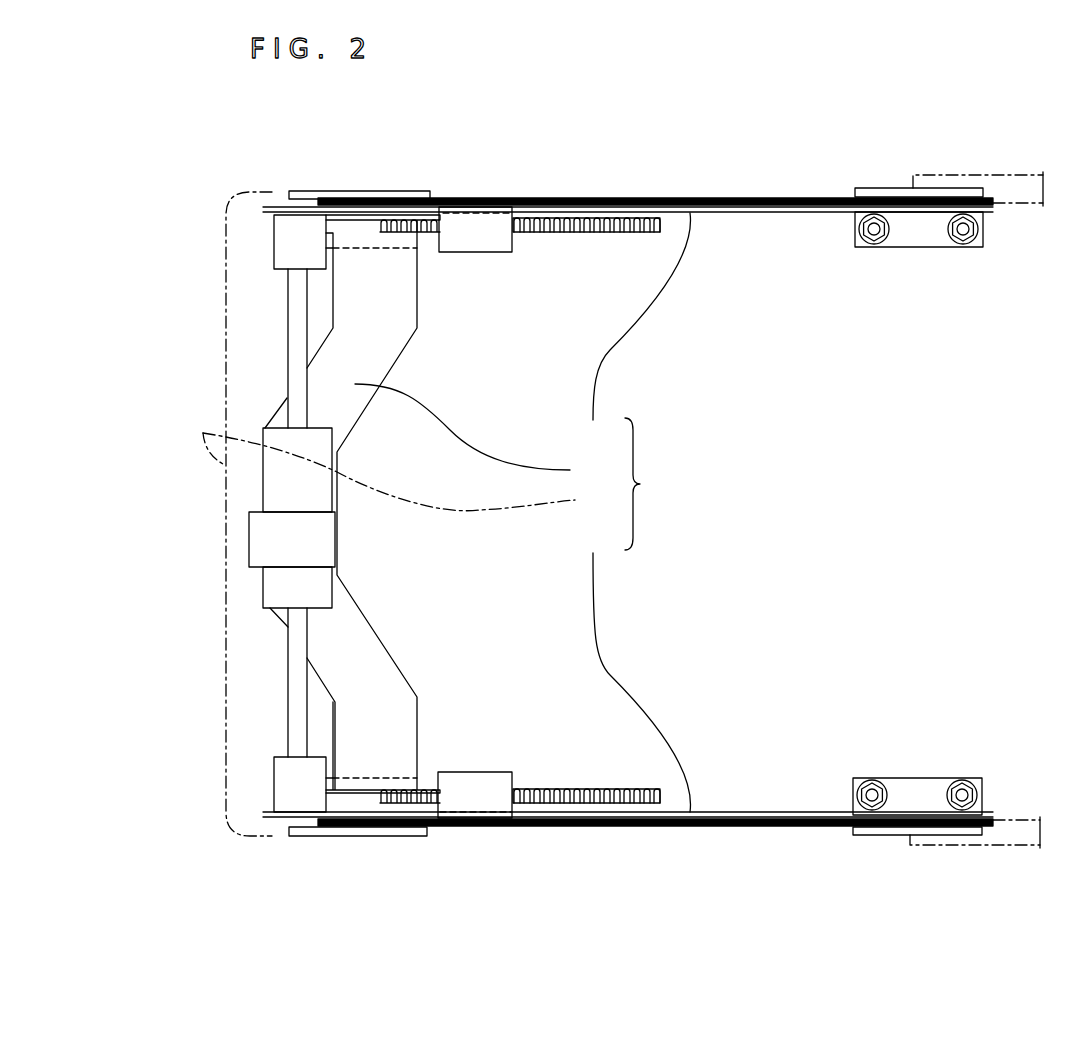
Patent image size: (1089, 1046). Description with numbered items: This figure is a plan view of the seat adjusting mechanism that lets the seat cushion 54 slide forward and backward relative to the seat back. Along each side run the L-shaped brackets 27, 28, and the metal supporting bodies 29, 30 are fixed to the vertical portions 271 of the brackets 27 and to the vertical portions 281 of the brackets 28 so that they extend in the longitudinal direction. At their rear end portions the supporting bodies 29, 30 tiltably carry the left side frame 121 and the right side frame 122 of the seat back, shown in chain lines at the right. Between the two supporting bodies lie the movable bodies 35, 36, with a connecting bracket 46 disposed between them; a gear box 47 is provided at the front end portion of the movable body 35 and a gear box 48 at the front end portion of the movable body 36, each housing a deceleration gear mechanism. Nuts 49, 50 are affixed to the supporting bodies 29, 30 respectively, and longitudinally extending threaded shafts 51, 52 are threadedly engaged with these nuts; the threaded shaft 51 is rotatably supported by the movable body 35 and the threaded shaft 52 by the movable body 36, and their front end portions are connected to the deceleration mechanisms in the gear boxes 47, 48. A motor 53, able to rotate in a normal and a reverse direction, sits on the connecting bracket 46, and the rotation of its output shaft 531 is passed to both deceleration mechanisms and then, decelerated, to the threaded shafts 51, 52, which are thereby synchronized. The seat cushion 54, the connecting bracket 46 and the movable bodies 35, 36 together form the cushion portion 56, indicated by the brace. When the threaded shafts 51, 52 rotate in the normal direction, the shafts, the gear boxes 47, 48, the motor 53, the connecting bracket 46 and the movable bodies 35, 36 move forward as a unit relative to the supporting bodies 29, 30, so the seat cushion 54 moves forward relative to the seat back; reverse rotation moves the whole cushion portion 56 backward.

The bracket 27 is at (432, 233).
The bracket 28 is at (913, 238).
The supporting body 29 is at (660, 198).
The supporting body 30 is at (700, 827).
The movable body 35 is at (635, 333).
The movable body 36 is at (635, 666).
The connecting bracket 46 is at (484, 435).
The gear box 47 is at (283, 243).
The gear box 48 is at (283, 783).
The nut 49 is at (493, 243).
The nut 50 is at (483, 773).
The threaded shaft 51 is at (613, 233).
The threaded shaft 52 is at (615, 790).
The motor 53 is at (268, 482).
The seat cushion 54 is at (408, 476).
The cushion portion 56 is at (654, 484).
The left side frame 121 is at (957, 175).
The right side frame 122 is at (1003, 845).
The vertical portion 271 is at (370, 191).
The vertical portion 281 is at (875, 189).
The output shaft 531 is at (295, 343).